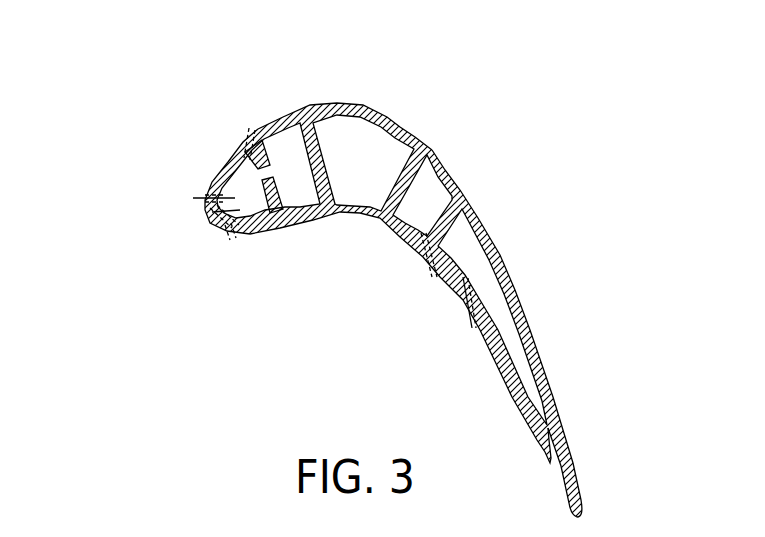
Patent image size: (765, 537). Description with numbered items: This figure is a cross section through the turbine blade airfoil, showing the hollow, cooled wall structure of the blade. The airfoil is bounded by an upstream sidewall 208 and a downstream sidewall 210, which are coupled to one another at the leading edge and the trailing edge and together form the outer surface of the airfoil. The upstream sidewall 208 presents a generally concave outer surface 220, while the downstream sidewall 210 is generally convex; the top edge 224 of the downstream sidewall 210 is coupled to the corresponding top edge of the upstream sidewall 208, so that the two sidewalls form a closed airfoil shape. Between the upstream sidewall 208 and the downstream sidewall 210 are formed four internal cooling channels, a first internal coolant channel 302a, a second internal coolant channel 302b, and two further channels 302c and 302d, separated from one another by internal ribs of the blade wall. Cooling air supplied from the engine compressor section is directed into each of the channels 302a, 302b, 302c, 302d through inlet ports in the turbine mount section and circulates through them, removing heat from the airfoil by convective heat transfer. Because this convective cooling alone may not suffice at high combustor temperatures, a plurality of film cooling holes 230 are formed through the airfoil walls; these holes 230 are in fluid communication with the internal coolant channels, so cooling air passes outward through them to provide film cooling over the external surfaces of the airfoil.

The upstream sidewall 208 is at (342, 222).
The downstream sidewall 210 is at (412, 146).
The outer surface 220 is at (281, 233).
The top edge 224 is at (393, 121).
The film cooling holes 230 is at (247, 130).
The first internal coolant channel 302a is at (477, 263).
The second internal coolant channel 302b is at (452, 193).
The internal cooling channel 302c is at (342, 130).
The internal cooling channel 302d is at (283, 136).